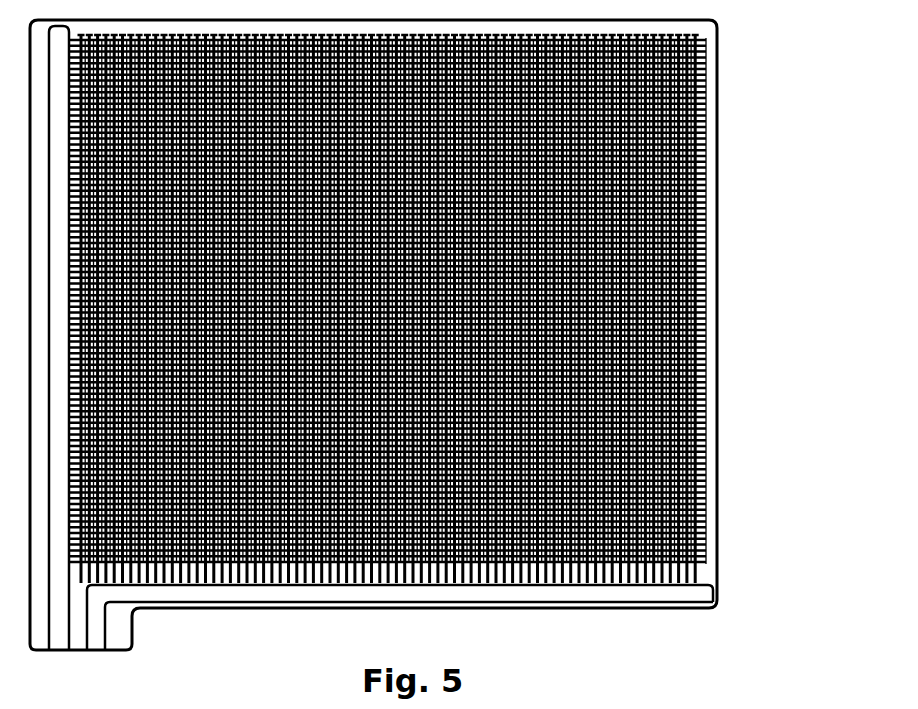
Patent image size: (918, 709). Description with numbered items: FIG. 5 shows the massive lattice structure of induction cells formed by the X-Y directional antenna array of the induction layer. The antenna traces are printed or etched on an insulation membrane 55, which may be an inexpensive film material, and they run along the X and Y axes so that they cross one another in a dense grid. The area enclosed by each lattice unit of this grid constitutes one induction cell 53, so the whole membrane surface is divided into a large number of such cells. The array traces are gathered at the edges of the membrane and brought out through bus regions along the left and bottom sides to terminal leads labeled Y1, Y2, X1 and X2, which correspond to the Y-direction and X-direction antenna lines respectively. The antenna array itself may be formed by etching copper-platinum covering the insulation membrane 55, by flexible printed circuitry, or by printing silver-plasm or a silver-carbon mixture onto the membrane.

The induction cell 53 is at (697, 170).
The insulation membrane 55 is at (712, 415).
The Y1 terminal line Y1 is at (50, 347).
The Y2 terminal line Y2 is at (69, 356).
The X1 terminal line X1 is at (394, 626).
The X2 terminal line X2 is at (405, 644).